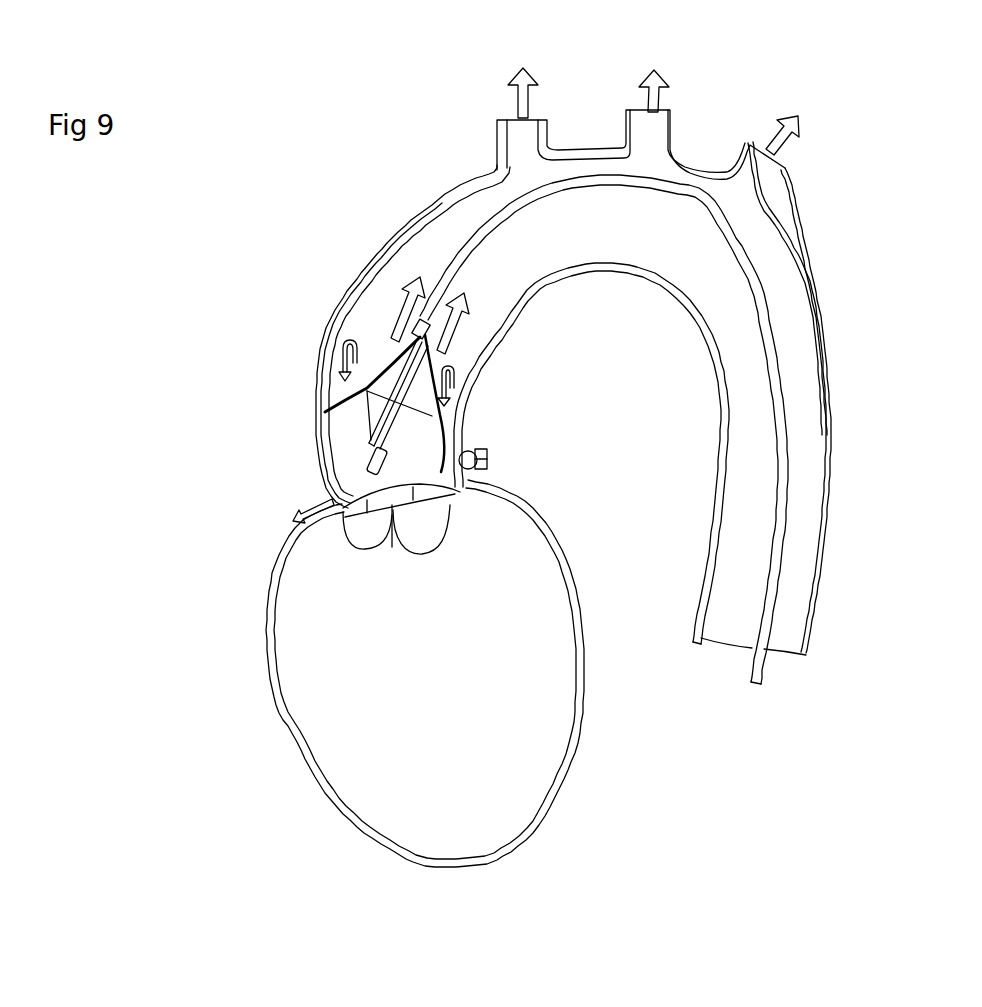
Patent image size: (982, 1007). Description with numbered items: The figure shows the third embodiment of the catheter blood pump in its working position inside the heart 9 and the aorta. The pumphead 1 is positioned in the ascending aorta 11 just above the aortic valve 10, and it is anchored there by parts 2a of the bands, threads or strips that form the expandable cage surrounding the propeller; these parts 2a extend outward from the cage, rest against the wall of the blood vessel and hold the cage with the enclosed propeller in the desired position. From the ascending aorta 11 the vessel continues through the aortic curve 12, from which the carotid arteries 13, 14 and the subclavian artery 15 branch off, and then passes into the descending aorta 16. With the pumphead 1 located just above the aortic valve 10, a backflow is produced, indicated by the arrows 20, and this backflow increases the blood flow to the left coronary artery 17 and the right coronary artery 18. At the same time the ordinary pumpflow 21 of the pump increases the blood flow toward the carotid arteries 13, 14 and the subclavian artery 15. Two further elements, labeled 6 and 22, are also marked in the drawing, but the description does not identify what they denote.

The pumphead 1 is at (381, 360).
The parts of the cage bands, threads or strips 2a is at (333, 407).
The aorta 6 is at (770, 322).
The heart 9 is at (286, 713).
The aortic valve 10 is at (383, 540).
The ascending aorta 11 is at (350, 446).
The aortic curve 12 is at (597, 247).
The carotid artery 13 is at (515, 135).
The carotid artery 14 is at (672, 128).
The subclavian artery 15 is at (769, 172).
The descending aorta 16 is at (818, 455).
The left coronary artery 17 is at (489, 459).
The right coronary artery 18 is at (298, 512).
The backflow arrows 20 is at (343, 362).
The ordinary pumpflow 21 is at (403, 305).
The catheter 22 is at (425, 338).